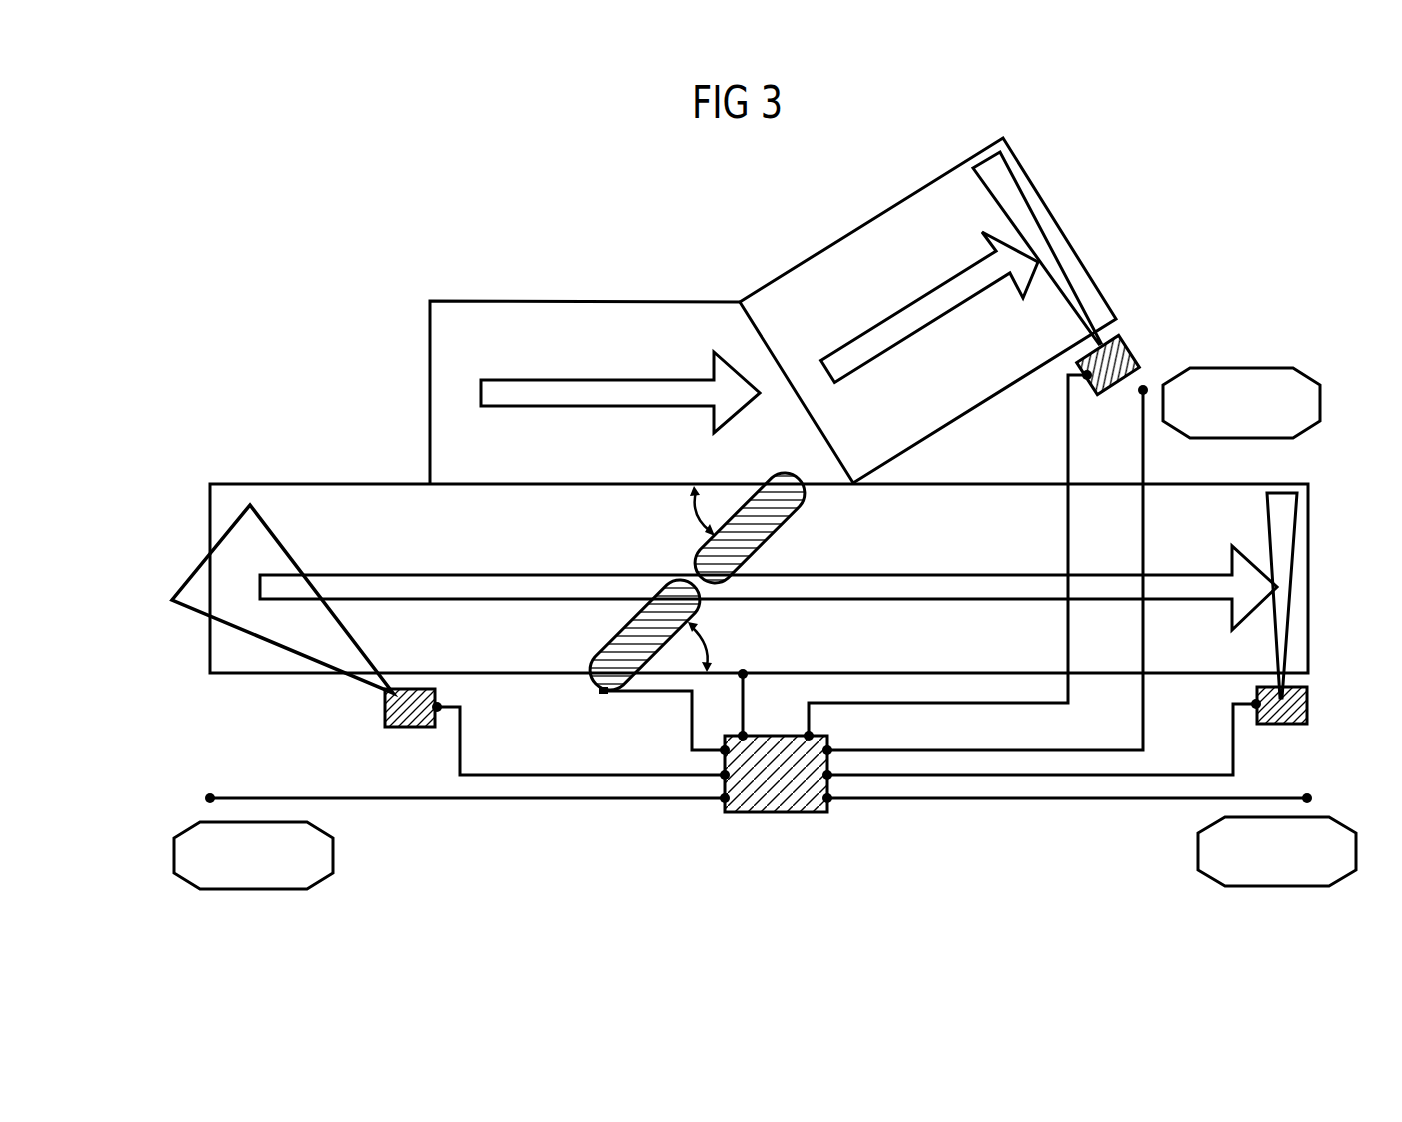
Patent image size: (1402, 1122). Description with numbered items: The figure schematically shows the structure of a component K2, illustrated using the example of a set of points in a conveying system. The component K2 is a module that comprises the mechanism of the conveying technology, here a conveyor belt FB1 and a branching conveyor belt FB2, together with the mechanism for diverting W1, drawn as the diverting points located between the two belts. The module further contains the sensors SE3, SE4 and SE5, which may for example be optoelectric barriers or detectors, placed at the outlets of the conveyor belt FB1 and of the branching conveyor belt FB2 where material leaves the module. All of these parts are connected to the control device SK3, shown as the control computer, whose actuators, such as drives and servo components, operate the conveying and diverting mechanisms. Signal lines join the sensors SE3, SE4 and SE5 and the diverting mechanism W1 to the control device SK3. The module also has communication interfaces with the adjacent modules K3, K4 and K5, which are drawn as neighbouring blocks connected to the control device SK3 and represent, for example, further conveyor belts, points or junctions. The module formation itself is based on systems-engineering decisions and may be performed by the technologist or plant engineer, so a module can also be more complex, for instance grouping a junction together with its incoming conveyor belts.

The component K2 is at (322, 209).
The conveying technology mechanism FB1 is at (210, 520).
The conveying technology mechanism FB2 is at (430, 335).
The mechanism for diverting W1 is at (787, 518).
The sensor SE3 is at (385, 703).
The sensor SE4 is at (1308, 704).
The sensor SE5 is at (1112, 343).
The control component SK3 is at (828, 812).
The adjacent module K3 is at (1311, 886).
The adjacent module K4 is at (1278, 368).
The adjacent module K5 is at (290, 889).